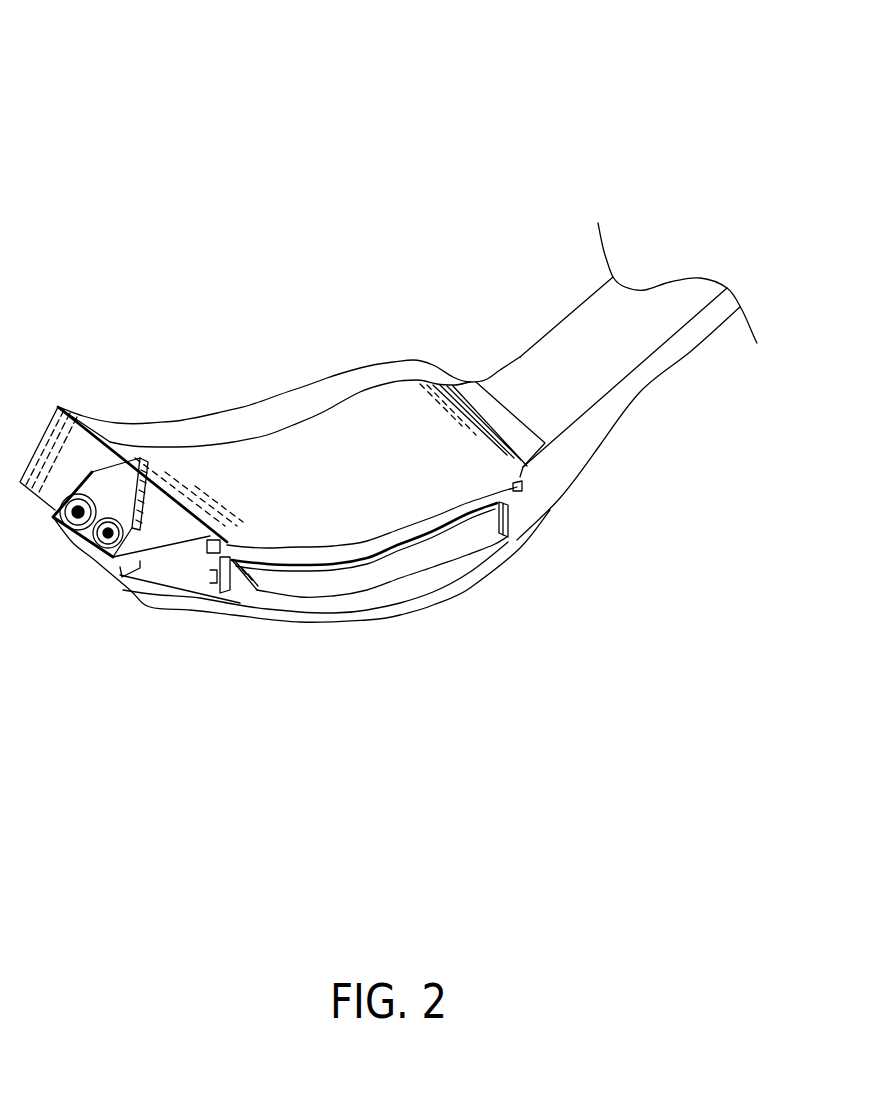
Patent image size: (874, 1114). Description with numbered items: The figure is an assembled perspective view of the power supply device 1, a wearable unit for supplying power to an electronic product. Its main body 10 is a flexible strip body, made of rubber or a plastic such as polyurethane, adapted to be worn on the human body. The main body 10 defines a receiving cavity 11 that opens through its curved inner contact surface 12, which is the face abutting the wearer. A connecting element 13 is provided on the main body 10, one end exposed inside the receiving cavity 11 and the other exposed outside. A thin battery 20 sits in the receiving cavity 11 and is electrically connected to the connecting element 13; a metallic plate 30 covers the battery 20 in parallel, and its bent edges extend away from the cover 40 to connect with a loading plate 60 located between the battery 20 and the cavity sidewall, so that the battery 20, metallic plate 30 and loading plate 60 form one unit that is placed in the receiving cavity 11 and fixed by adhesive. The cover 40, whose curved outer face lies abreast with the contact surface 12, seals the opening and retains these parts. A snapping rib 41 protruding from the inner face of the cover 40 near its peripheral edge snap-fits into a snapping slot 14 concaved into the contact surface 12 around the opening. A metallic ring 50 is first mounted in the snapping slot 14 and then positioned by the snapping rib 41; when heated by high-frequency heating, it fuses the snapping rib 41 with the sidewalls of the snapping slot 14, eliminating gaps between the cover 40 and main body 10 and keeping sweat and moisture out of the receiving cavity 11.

The power supply device 1 is at (122, 54).
The main body 10 is at (283, 417).
The receiving cavity 11 is at (238, 596).
The contact surface 12 is at (361, 384).
The connecting element 13 is at (147, 553).
The snapping slot 14 is at (517, 487).
The battery 20 is at (413, 557).
The metallic plate 30 is at (518, 490).
The cover 40 is at (447, 422).
The snapping rib 41 is at (523, 487).
The metallic ring 50 is at (220, 590).
The loading plate 60 is at (380, 585).